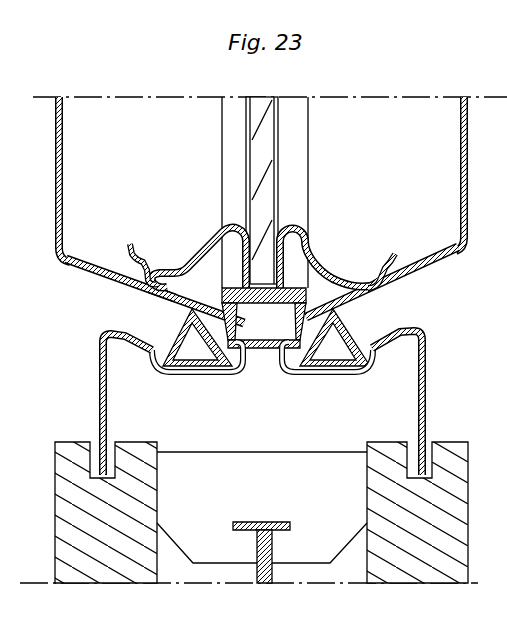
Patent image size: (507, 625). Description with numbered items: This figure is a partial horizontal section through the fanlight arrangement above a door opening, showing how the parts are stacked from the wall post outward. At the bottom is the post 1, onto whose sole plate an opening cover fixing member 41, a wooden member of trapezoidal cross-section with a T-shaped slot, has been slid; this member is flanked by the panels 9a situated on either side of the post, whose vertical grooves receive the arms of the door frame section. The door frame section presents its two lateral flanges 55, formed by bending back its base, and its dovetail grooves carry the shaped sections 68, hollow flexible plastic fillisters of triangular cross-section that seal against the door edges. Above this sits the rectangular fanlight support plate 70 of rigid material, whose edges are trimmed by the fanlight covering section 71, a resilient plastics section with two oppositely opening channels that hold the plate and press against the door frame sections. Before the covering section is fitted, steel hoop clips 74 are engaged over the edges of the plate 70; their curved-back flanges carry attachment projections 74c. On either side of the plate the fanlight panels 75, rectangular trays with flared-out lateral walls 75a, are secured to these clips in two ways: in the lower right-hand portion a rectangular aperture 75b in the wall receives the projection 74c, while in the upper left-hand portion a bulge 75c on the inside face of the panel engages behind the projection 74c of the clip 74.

The fanlight panel 75 is at (58, 172).
The flared-out lateral wall 75a is at (105, 282).
The rectangular aperture 75b is at (380, 289).
The bulge 75c is at (168, 294).
The fanlight support plate 70 is at (257, 191).
The clip 74 is at (215, 232).
The attachment projection 74c is at (150, 275).
The fanlight covering section 71 is at (308, 290).
The shaped section 68 is at (160, 363).
The lateral flange 55 is at (95, 432).
The panel 9a is at (68, 496).
The opening cover fixing member 41 is at (185, 548).
The post 1 is at (265, 578).